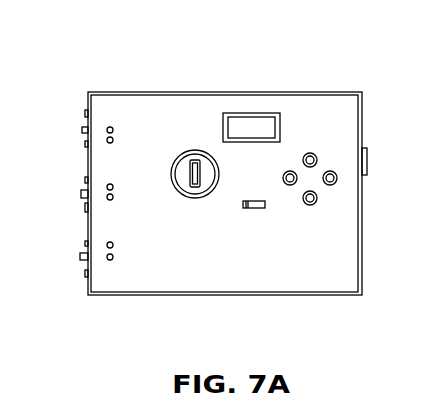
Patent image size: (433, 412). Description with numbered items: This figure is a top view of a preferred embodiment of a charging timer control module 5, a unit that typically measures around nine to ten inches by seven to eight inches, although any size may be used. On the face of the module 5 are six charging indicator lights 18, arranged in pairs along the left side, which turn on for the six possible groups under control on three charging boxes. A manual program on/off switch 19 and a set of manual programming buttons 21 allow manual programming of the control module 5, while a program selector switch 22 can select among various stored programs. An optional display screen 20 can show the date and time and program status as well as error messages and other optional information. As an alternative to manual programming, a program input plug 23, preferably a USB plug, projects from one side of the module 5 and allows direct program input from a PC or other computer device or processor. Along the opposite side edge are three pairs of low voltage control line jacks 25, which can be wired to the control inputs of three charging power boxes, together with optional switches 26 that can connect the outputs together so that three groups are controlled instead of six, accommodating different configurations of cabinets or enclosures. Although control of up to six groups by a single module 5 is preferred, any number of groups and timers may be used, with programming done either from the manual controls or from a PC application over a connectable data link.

The charging timer control module 5 is at (209, 102).
The charging indicator lights 18 is at (114, 140).
The manual program on/off switch 19 is at (187, 180).
The display screen 20 is at (274, 127).
The manual programming buttons 21 is at (318, 200).
The program selector switch 22 is at (255, 210).
The program input plug 23 is at (367, 162).
The low voltage control line jacks 25 is at (85, 242).
The switches 26 is at (85, 132).